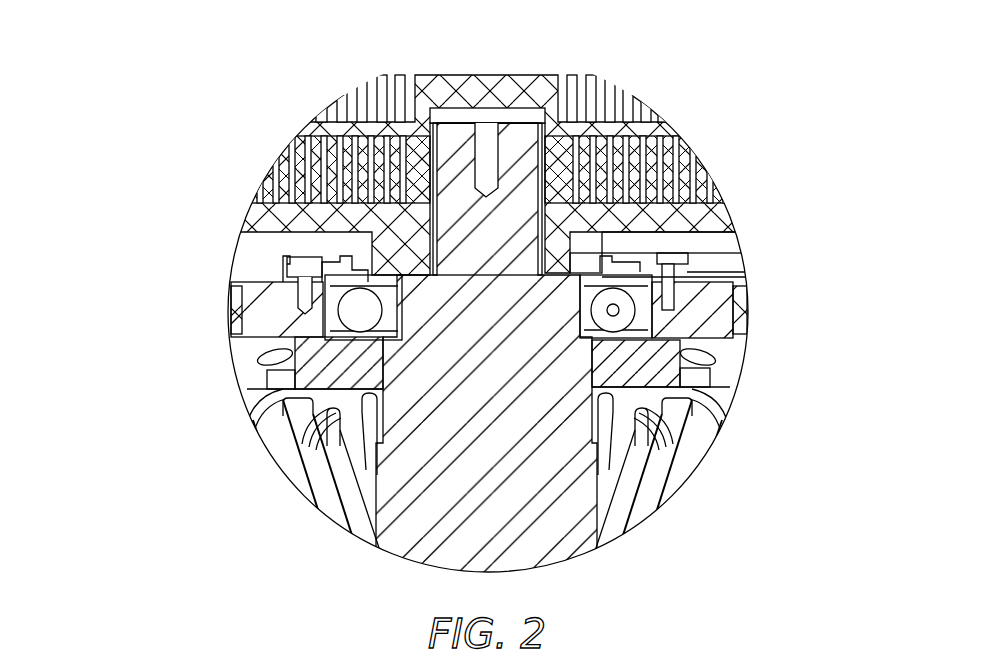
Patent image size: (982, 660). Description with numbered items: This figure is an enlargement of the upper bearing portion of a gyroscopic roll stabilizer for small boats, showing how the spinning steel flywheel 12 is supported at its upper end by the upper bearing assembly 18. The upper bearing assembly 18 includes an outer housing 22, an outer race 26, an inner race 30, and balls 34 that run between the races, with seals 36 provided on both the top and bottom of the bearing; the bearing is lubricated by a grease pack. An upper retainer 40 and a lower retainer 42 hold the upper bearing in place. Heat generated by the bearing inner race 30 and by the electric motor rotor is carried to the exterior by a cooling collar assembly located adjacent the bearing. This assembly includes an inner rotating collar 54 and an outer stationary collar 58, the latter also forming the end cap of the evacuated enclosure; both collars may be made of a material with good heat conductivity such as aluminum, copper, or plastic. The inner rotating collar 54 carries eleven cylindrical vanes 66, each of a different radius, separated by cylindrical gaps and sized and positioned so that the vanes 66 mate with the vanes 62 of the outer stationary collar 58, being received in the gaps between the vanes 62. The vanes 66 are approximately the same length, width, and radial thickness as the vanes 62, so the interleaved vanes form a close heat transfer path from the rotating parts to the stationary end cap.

The flywheel 12 is at (486, 354).
The upper bearing assembly 18 is at (194, 308).
The outer housing 22 is at (262, 315).
The outer race 26 is at (328, 297).
The inner race 30 is at (386, 286).
The balls 34 is at (283, 383).
The seals 36 is at (638, 273).
The upper retainer 40 is at (307, 350).
The lower retainer 42 is at (282, 259).
The inner rotating collar 54 is at (575, 244).
The outer stationary collar 58 is at (422, 92).
The vanes 62 is at (651, 182).
The vanes 66 is at (661, 152).